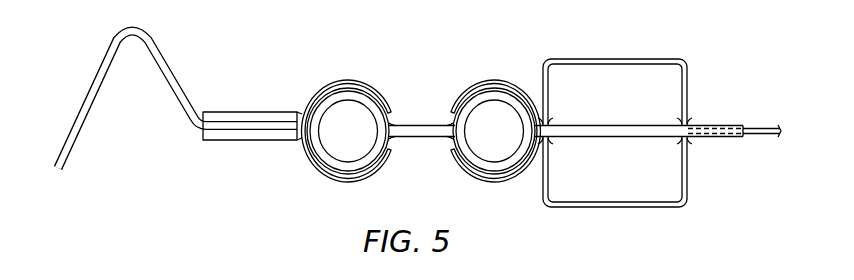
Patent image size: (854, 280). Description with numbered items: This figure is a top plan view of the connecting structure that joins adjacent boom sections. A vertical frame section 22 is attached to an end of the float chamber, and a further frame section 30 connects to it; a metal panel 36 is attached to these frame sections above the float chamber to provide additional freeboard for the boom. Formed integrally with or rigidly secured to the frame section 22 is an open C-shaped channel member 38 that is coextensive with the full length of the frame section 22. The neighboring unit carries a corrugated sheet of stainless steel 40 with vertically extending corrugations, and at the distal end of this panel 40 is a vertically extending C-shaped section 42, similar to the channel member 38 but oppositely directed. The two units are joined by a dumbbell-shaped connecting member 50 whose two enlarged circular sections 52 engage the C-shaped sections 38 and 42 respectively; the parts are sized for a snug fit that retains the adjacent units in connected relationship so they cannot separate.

The vertical frame section 22 is at (623, 58).
The frame section 30 is at (714, 124).
The metal panel 36 is at (763, 137).
The C-shaped channel member 38 is at (496, 82).
The corrugated sheet 40 is at (90, 98).
The C-shaped section 42 is at (330, 80).
The dumbbell-shaped connecting member 50 is at (421, 126).
The inner ring 52 is at (345, 165).